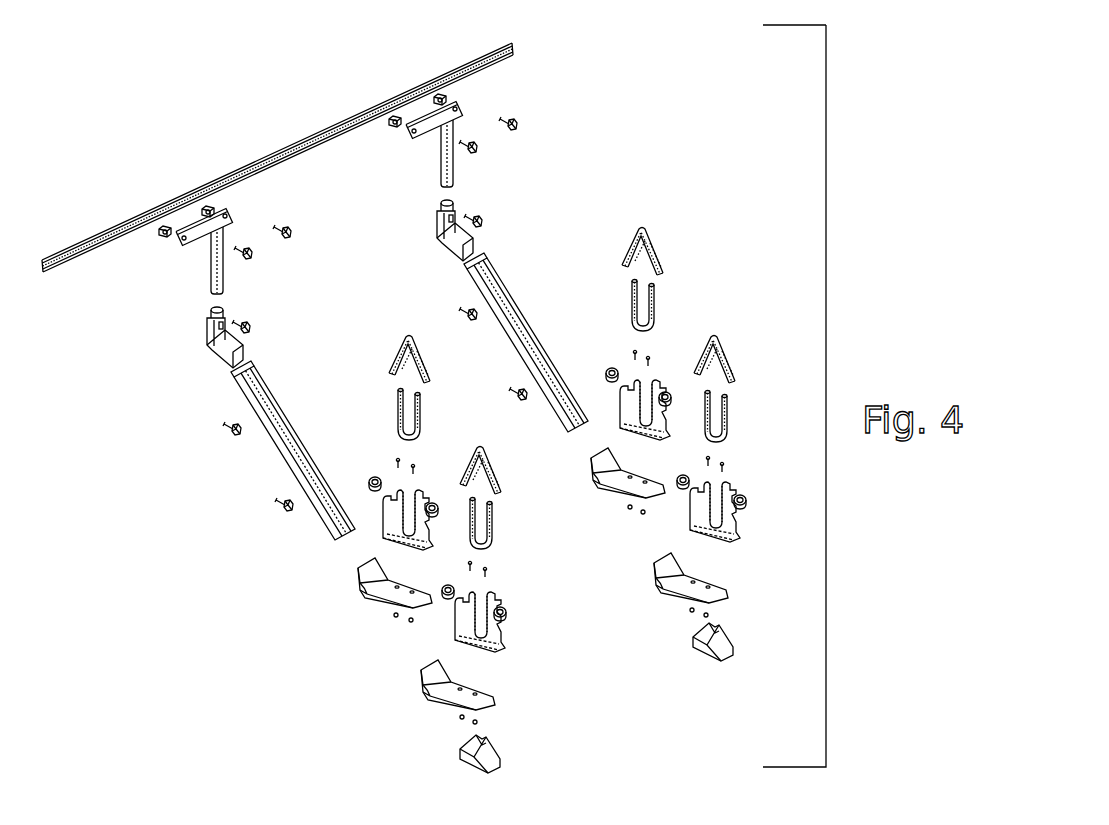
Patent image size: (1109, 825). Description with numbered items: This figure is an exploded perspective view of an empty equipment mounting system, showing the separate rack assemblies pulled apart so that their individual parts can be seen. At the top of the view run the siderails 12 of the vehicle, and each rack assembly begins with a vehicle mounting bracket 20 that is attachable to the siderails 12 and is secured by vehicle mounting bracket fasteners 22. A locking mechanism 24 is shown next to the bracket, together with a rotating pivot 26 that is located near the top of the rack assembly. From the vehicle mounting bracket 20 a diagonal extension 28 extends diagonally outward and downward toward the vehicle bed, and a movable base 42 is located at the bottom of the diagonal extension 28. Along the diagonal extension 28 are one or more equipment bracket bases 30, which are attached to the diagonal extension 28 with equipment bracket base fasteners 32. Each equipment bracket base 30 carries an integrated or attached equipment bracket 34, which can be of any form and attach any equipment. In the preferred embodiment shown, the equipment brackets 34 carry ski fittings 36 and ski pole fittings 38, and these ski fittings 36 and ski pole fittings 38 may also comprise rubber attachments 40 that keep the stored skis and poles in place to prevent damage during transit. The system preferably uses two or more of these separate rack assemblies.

The siderails 12 is at (520, 47).
The vehicle mounting bracket 20 is at (200, 255).
The vehicle mounting bracket fastener 22 is at (290, 243).
The locking mechanism 24 is at (250, 332).
The rotating pivot 26 is at (200, 342).
The diagonal extension 28 is at (242, 395).
The equipment bracket base 30 is at (413, 687).
The equipment bracket base fasteners 32 is at (268, 507).
The equipment bracket 34 is at (507, 657).
The ski fittings 36 is at (396, 402).
The ski pole fittings 38 is at (370, 472).
The rubber attachment 40 is at (390, 345).
The base 42 is at (455, 755).